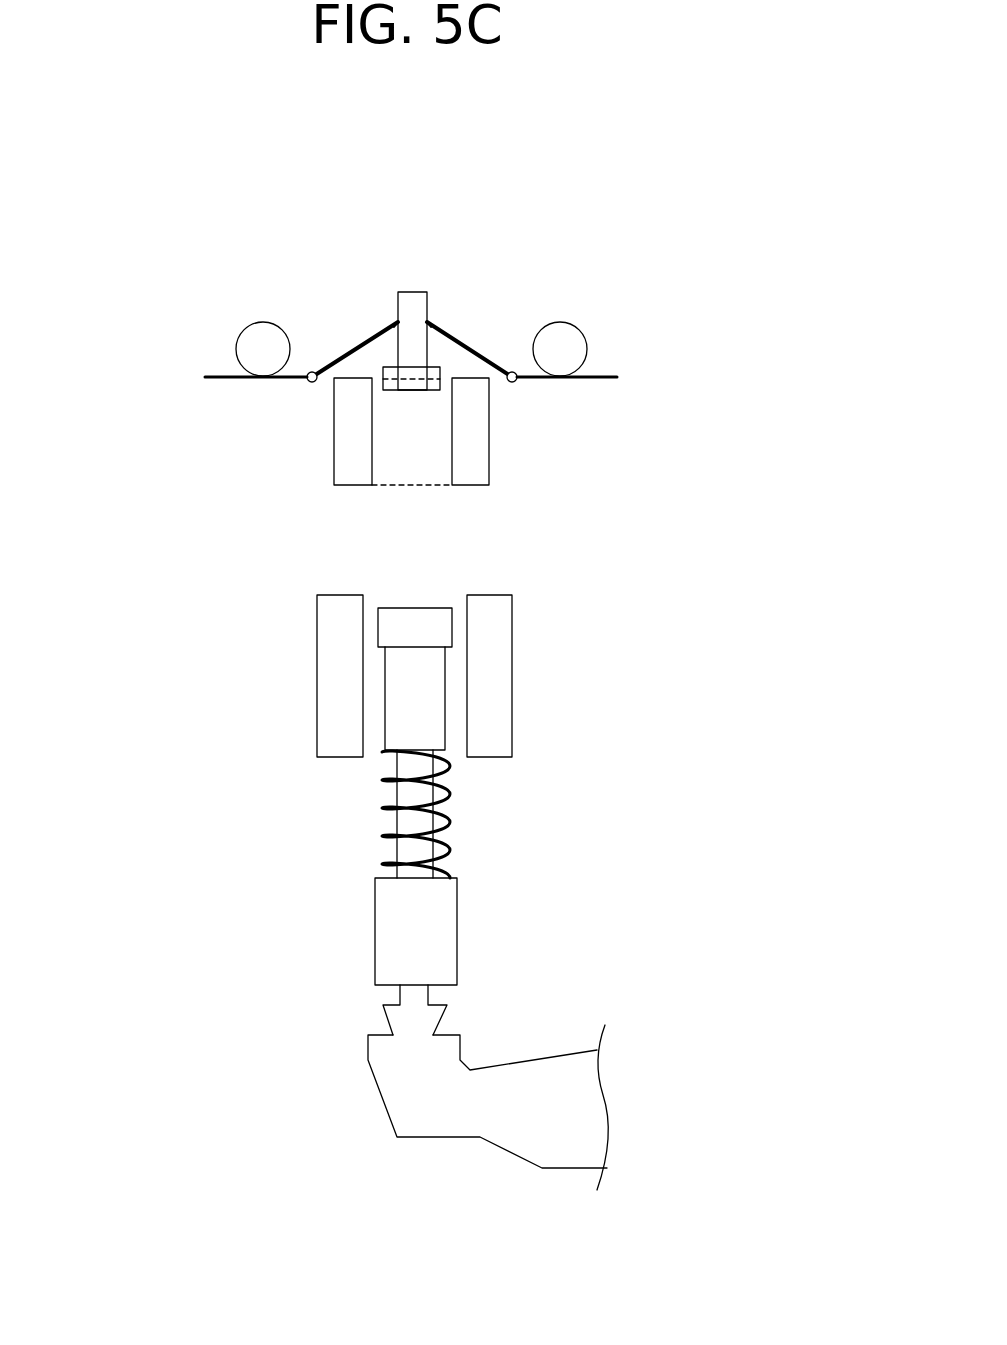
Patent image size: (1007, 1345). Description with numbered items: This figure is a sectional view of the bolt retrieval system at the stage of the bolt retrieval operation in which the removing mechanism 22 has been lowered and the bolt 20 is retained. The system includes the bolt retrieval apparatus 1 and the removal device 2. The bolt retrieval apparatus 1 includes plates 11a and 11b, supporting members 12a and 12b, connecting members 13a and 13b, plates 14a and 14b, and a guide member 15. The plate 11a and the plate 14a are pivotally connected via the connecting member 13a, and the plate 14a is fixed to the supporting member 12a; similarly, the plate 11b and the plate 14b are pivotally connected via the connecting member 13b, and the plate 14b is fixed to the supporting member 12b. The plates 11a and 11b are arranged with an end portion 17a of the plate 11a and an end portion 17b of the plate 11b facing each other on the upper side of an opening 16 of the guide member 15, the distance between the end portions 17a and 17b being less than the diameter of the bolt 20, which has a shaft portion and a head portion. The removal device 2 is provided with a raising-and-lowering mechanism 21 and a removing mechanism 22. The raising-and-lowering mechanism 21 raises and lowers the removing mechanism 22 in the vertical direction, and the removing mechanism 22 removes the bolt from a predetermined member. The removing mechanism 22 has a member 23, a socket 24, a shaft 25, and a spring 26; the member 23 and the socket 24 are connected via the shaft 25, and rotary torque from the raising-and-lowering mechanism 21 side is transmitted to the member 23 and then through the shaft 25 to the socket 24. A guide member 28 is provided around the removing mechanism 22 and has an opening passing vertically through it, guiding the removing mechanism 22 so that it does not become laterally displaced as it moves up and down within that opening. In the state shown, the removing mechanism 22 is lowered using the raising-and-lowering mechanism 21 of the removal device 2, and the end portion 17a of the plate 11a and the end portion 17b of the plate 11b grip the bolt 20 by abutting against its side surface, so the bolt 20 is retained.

The bolt retrieval apparatus 1 is at (575, 168).
The removal device 2 is at (662, 787).
The plate 11a is at (459, 338).
The plate 11b is at (362, 340).
The supporting member 12a is at (567, 322).
The supporting member 12b is at (260, 322).
The connecting member 13a is at (517, 382).
The connecting member 13b is at (306, 382).
The plate 14a is at (608, 375).
The plate 14b is at (212, 376).
The guide member 15 is at (479, 487).
The opening 16 is at (388, 494).
The end portion 17a is at (431, 321).
The end portion 17b is at (394, 321).
The bolt 20 is at (407, 292).
The raising-and-lowering mechanism 21 is at (383, 1100).
The removing mechanism 22 is at (345, 808).
The member 23 is at (457, 923).
The socket 24 is at (445, 707).
The shaft 25 is at (437, 845).
The spring 26 is at (450, 798).
The guide member 28 is at (512, 633).